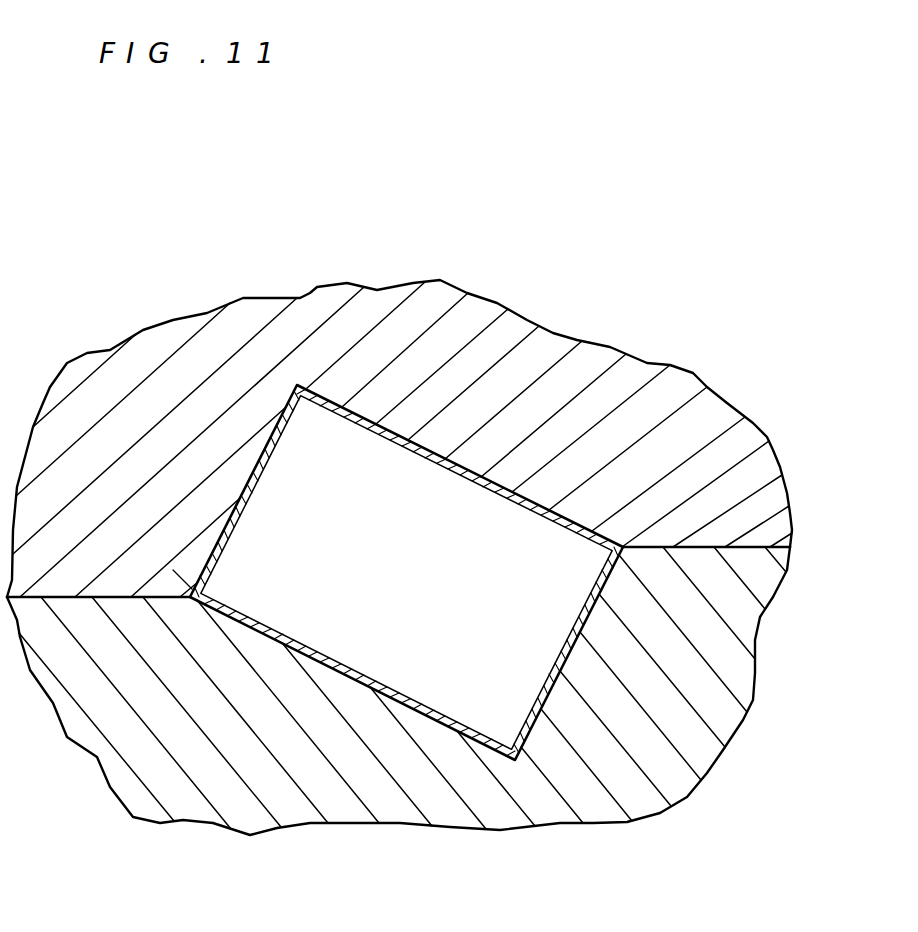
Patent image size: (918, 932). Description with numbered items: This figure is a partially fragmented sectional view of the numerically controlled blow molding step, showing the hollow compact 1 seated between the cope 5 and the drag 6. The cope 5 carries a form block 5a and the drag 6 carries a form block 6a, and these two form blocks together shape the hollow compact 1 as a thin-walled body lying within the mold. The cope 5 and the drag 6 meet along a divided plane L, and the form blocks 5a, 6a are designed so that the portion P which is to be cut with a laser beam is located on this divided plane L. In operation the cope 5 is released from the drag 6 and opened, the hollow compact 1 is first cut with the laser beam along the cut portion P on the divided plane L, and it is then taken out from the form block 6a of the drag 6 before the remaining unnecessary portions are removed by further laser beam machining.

The hollow compact 1 is at (376, 394).
The cope 5 is at (580, 382).
The form block of the cope 5a is at (468, 472).
The drag 6 is at (667, 770).
The form block of the drag 6a is at (388, 702).
The divided plane L is at (723, 545).
The cut portion P is at (165, 592).